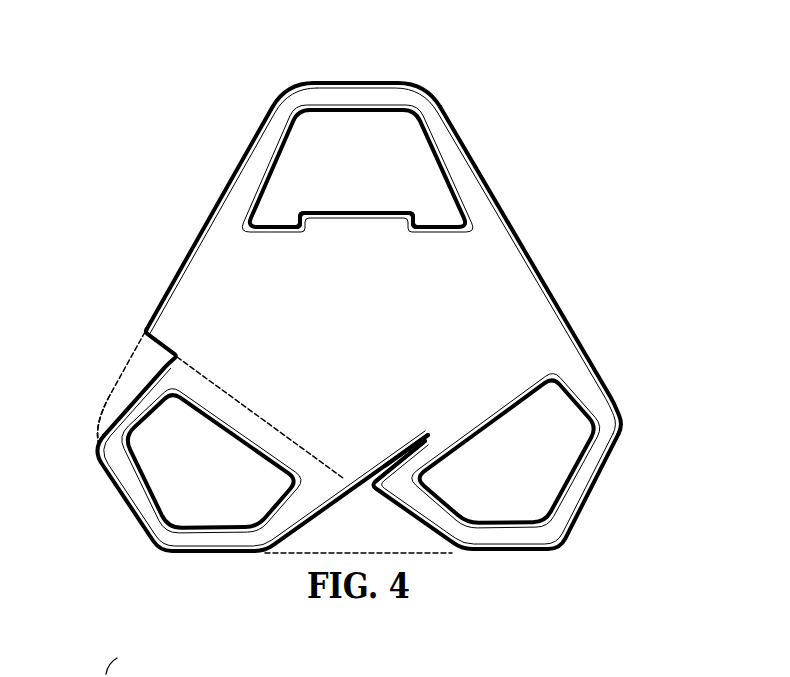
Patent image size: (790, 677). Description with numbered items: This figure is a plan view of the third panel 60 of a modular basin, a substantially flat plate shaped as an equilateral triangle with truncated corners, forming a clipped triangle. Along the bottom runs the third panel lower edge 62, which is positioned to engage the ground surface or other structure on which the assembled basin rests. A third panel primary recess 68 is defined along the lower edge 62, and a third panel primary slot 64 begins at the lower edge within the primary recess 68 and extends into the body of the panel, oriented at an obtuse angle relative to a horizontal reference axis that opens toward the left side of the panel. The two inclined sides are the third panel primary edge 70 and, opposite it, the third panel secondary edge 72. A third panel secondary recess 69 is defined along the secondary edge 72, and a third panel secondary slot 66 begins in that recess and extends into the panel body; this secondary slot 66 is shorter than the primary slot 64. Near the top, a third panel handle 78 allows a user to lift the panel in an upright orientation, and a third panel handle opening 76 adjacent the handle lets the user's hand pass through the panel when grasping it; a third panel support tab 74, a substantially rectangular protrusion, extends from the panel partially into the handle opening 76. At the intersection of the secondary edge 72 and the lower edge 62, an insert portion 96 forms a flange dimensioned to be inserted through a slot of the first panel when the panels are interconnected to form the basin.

The third panel 60 is at (594, 250).
The third panel lower edge 62 is at (203, 555).
The third panel primary slot 64 is at (392, 459).
The third panel secondary slot 66 is at (168, 338).
The third panel primary recess 68 is at (334, 522).
The third panel secondary recess 69 is at (135, 373).
The third panel primary edge 70 is at (510, 226).
The third panel secondary edge 72 is at (202, 230).
The third panel support tab 74 is at (345, 213).
The third panel handle opening 76 is at (407, 173).
The third panel handle 78 is at (352, 95).
The insert portion 96 is at (98, 402).